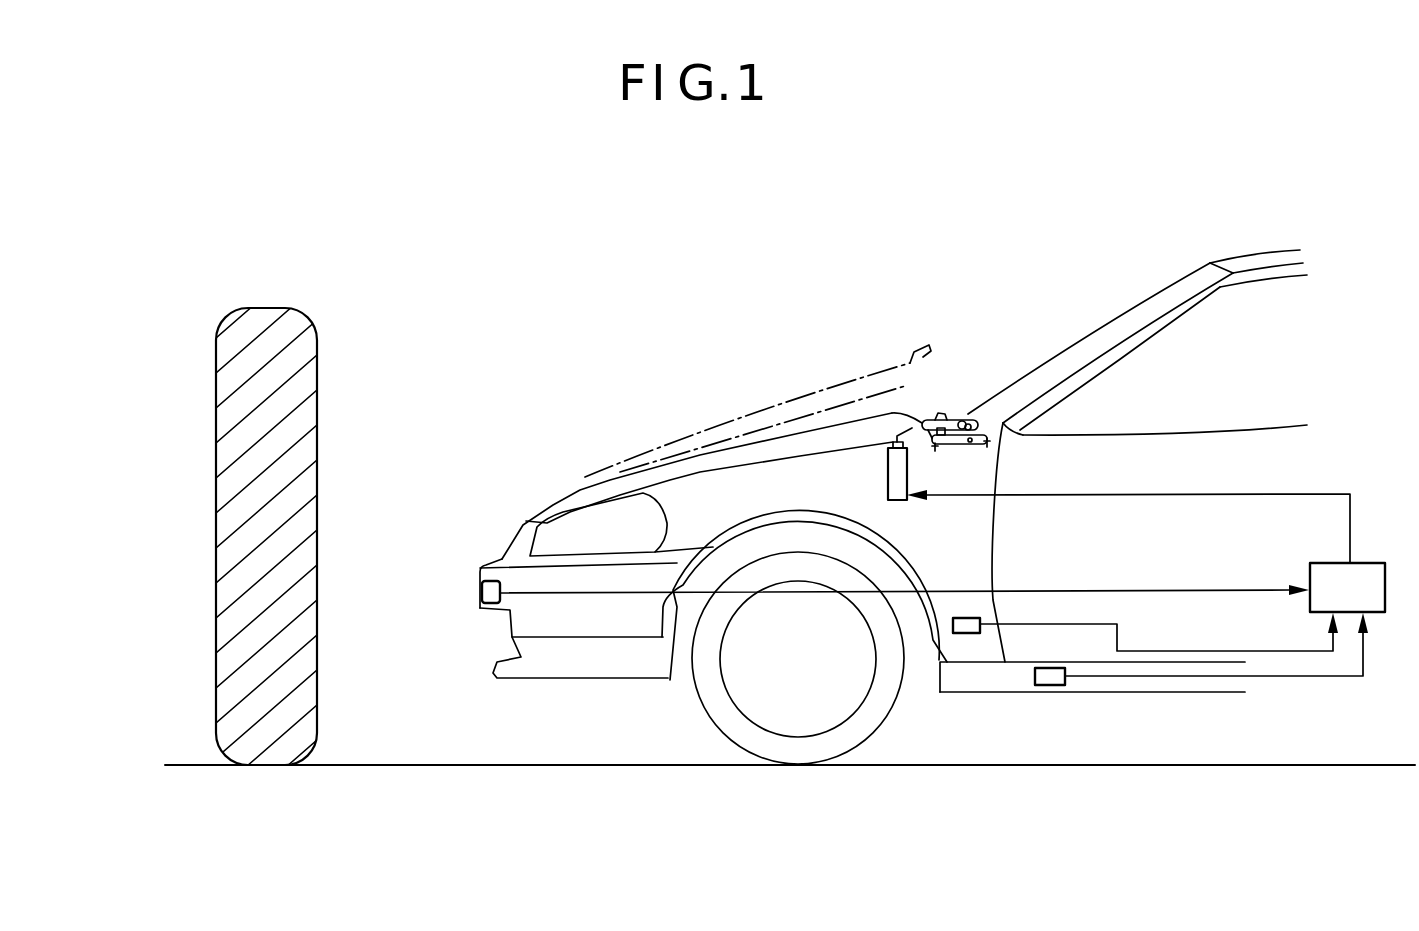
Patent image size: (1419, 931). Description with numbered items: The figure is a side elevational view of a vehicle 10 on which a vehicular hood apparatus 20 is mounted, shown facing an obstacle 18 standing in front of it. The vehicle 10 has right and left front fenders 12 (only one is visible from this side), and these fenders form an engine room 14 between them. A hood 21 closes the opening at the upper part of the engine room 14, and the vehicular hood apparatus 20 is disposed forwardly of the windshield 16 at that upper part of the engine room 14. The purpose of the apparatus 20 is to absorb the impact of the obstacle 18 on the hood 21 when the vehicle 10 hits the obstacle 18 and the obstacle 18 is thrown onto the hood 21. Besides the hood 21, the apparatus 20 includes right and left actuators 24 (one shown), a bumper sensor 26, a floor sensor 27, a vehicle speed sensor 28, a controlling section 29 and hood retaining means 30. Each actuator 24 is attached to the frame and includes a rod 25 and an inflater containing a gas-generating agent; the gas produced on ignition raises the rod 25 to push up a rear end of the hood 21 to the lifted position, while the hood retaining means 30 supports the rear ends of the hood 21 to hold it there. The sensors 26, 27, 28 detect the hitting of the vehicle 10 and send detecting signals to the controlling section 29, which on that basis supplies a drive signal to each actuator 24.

The vehicle 10 is at (1240, 228).
The front fender 12 is at (734, 482).
The engine room 14 is at (820, 478).
The windshield 16 is at (1092, 329).
The obstacle 18 is at (274, 302).
The vehicular hood apparatus 20 is at (909, 400).
The hood 21 is at (627, 468).
The actuator 24 is at (888, 478).
The rod 25 is at (893, 440).
The bumper sensor 26 is at (492, 603).
The floor sensor 27 is at (1050, 685).
The vehicle speed sensor 28 is at (965, 633).
The controlling section 29 is at (1386, 590).
The hood retaining means 30 is at (958, 402).